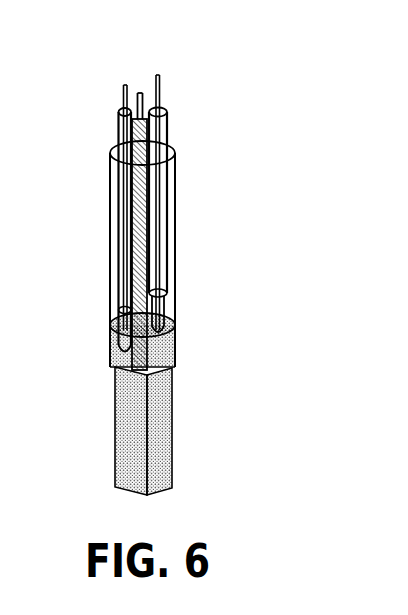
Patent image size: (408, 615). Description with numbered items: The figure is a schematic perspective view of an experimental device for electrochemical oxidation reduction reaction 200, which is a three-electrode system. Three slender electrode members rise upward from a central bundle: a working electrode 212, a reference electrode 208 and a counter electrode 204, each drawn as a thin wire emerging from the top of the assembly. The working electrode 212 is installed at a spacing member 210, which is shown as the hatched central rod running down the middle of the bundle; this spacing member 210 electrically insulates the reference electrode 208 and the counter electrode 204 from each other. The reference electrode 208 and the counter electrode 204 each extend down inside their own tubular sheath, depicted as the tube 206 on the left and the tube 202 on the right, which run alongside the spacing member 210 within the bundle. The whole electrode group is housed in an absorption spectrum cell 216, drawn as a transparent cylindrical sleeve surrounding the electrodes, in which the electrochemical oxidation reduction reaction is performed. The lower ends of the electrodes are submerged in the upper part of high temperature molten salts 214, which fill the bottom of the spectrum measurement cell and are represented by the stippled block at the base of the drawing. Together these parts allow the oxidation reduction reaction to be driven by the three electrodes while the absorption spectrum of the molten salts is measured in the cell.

The experimental device for electrochemical oxidation reduction reaction 200 is at (345, 172).
The second tube 202 is at (168, 124).
The counter electrode 204 is at (163, 82).
The first tube 206 is at (120, 132).
The reference electrode 208 is at (122, 93).
The spacing member 210 is at (135, 232).
The working electrode 212 is at (137, 90).
The high temperature molten salts 214 is at (160, 415).
The absorption spectrum cell 216 is at (176, 228).